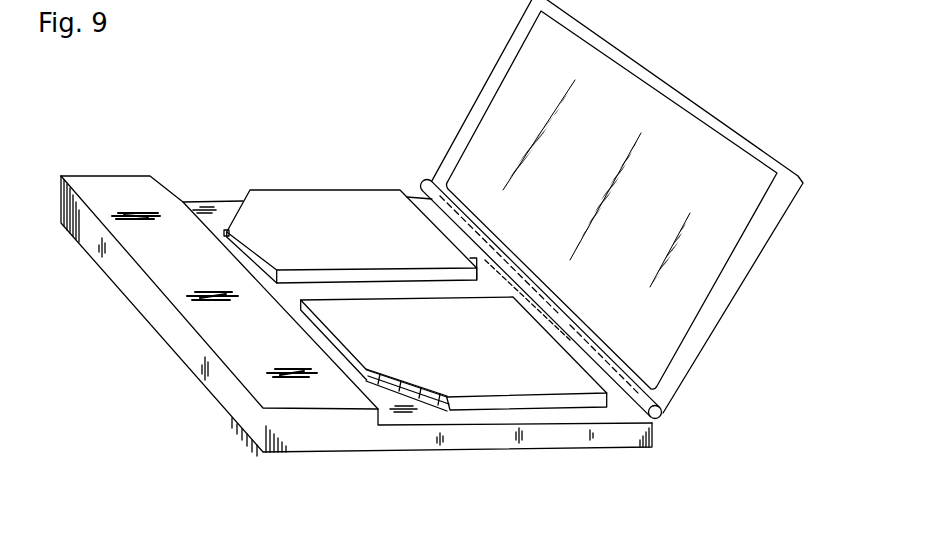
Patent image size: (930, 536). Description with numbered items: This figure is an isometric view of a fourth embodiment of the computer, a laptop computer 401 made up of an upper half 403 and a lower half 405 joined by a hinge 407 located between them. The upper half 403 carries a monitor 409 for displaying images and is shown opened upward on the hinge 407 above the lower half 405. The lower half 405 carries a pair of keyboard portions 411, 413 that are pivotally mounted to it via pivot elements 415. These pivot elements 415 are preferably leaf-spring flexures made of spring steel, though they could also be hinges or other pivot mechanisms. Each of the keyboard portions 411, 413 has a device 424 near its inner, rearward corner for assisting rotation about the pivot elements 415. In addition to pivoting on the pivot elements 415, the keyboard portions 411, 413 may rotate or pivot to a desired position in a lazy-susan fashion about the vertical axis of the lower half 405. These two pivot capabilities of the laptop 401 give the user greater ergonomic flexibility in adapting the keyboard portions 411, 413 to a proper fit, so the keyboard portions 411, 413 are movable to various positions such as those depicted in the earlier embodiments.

The laptop computer 401 is at (236, 93).
The upper half 403 is at (478, 98).
The lower half 405 is at (176, 192).
The hinge 407 is at (661, 418).
The monitor 409 is at (693, 267).
The keyboard portion 411 is at (334, 195).
The keyboard portion 413 is at (540, 397).
The pivot elements 415 is at (226, 230).
The device 424 is at (477, 258).